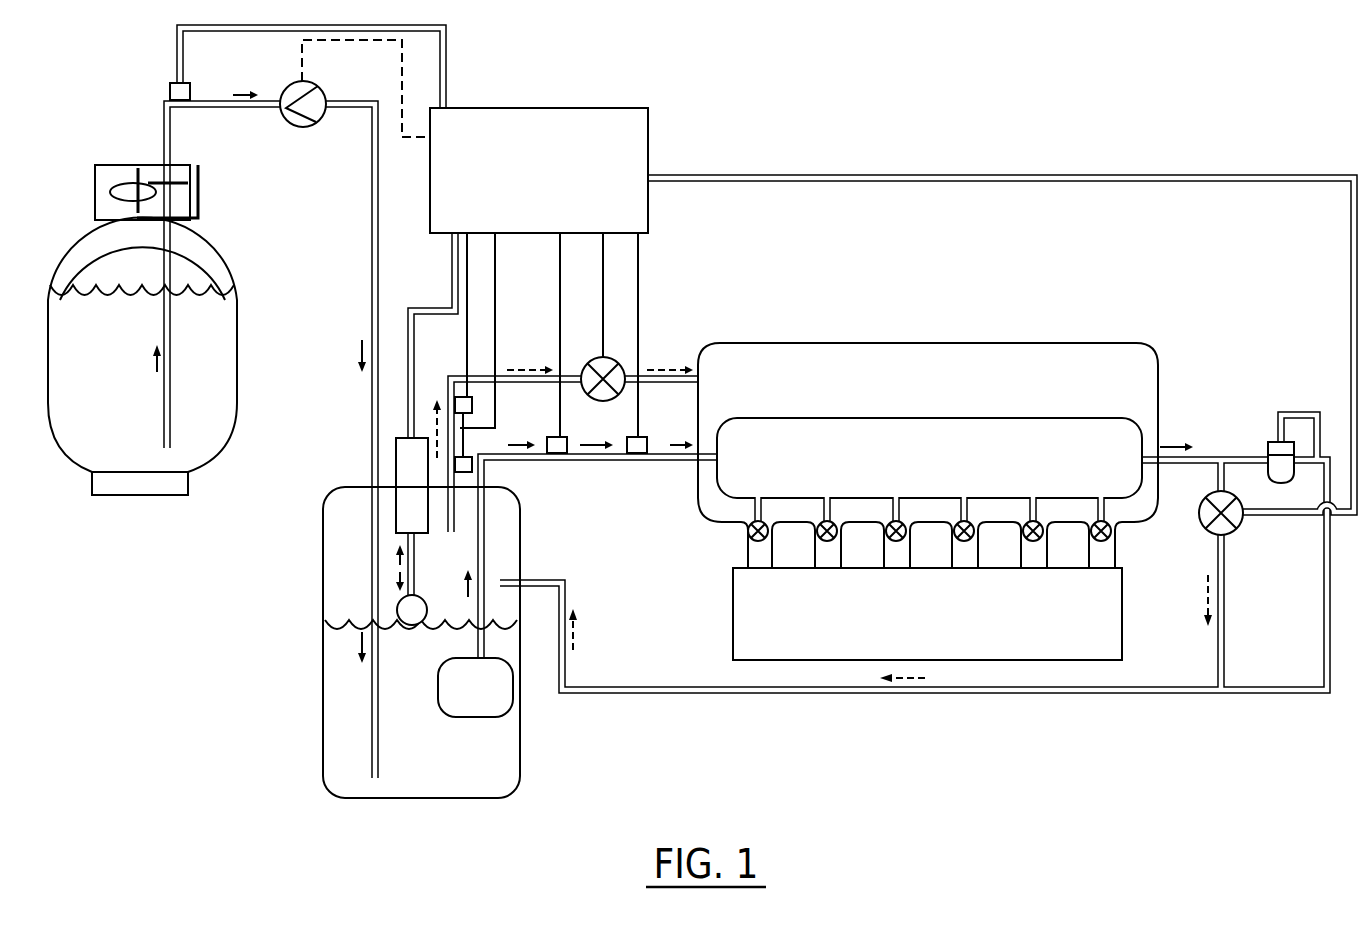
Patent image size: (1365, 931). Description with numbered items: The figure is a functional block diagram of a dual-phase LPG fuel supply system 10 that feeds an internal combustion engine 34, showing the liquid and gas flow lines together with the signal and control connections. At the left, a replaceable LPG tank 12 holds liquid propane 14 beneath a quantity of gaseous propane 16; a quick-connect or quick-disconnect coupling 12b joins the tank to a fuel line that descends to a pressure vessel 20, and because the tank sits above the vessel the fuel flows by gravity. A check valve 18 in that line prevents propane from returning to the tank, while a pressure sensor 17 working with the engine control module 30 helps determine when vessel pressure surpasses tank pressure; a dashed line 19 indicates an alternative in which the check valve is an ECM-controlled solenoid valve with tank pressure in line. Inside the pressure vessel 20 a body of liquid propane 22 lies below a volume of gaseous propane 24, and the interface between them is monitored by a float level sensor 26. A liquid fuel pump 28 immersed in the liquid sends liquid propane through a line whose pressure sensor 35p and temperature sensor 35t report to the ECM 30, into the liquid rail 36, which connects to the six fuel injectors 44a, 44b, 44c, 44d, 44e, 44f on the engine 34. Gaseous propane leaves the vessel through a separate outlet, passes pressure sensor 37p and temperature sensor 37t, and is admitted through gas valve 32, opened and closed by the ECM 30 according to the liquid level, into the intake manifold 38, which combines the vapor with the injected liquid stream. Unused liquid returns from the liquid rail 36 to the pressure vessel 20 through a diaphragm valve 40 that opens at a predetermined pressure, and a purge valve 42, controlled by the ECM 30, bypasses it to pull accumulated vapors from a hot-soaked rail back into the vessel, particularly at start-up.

The fuel supply system 10 is at (885, 100).
The LPG tank 12 is at (208, 438).
The quick-connect/quick-disconnect coupling 12b is at (128, 181).
The liquid propane 14 is at (62, 329).
The gaseous propane 16 is at (87, 251).
The pressure sensor 17 is at (168, 93).
The check valve 18 is at (290, 82).
The dashed line 19 is at (405, 97).
The pressure vessel 20 is at (361, 776).
The liquid propane 22 is at (340, 696).
The gaseous propane 24 is at (342, 518).
The float level sensor 26 is at (412, 531).
The liquid fuel pump 28 is at (440, 683).
The engine control module (ECM) 30 is at (603, 213).
The gas valve 32 is at (597, 358).
The internal combustion engine 34 is at (1086, 648).
The pressure sensor 35p is at (650, 447).
The temperature sensor 35t is at (570, 449).
The liquid rail 36 is at (1097, 492).
The pressure sensor 37p is at (476, 406).
The temperature sensor 37t is at (478, 472).
The intake manifold 38 is at (1097, 415).
The diaphragm valve 40 is at (1268, 447).
The purge valve 42 is at (1203, 511).
The fuel injector 44a is at (749, 528).
The fuel injector 44b is at (818, 524).
The fuel injector 44c is at (887, 524).
The fuel injector 44d is at (955, 524).
The fuel injector 44e is at (1024, 524).
The fuel injector 44f is at (1092, 524).